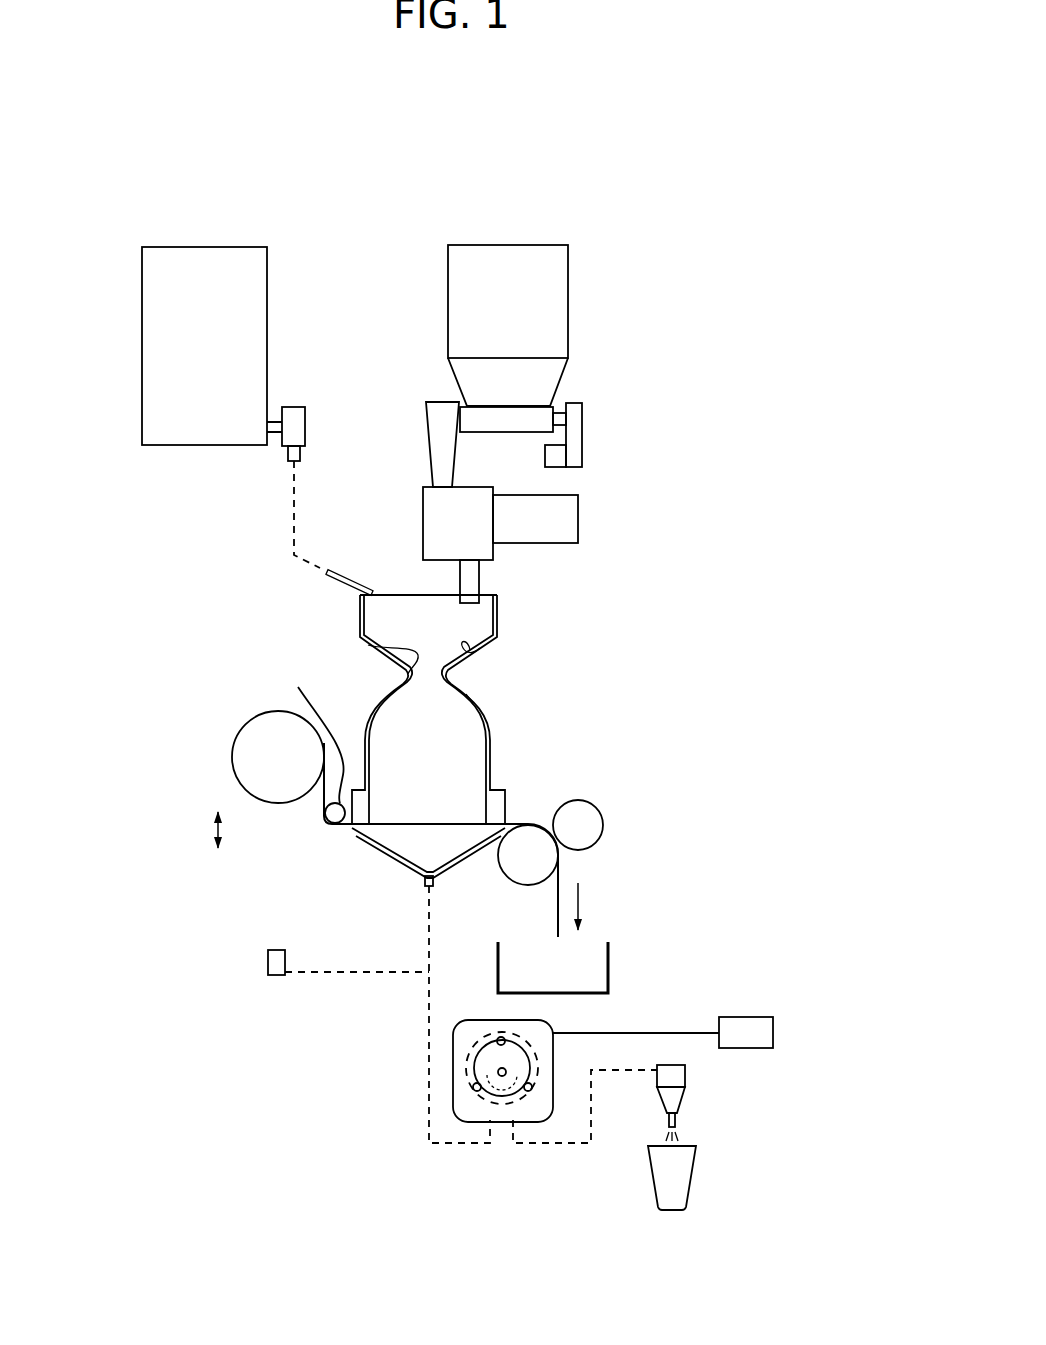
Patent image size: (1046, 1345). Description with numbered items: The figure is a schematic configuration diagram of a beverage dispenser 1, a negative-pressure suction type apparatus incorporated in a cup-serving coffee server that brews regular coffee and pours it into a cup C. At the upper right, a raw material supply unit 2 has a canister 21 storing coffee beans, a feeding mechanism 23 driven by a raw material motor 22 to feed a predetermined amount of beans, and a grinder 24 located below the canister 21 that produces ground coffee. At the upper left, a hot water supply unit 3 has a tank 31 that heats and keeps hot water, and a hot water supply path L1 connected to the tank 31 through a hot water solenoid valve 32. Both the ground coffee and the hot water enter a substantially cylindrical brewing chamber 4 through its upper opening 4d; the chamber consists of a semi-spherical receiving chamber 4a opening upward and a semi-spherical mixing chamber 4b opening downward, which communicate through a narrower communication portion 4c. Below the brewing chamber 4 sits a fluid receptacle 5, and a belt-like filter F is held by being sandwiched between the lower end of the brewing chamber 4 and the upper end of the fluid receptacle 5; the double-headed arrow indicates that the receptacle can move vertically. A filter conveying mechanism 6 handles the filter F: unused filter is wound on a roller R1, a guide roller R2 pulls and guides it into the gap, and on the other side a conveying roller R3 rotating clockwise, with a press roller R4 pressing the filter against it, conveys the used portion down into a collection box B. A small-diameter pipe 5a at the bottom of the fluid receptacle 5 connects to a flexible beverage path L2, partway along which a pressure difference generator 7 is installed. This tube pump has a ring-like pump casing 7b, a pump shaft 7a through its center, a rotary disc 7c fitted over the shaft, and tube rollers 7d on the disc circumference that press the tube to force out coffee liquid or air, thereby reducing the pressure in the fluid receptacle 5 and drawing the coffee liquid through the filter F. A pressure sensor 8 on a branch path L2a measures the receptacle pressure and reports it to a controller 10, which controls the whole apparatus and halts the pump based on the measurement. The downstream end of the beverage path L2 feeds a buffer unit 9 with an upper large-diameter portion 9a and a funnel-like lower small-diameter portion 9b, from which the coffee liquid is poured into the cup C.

The beverage dispenser 1 is at (317, 185).
The raw material supply unit 2 is at (588, 275).
The canister 21 is at (568, 325).
The raw material motor 22 is at (575, 455).
The feeding mechanism 23 is at (545, 405).
The grinder 24 is at (578, 520).
The hot water supply unit 3 is at (150, 240).
The tank 31 is at (142, 310).
The hot water solenoid valve 32 is at (296, 407).
The hot water supply path L1 is at (300, 478).
The brewing chamber 4 is at (615, 657).
The receiving chamber 4a is at (465, 645).
The mixing chamber 4b is at (468, 698).
The communication portion 4c is at (372, 652).
The upper opening 4d is at (413, 594).
The roller R1 is at (238, 737).
The guide roller R2 is at (309, 733).
The filter F is at (326, 806).
The fluid receptacle 5 is at (370, 851).
The pipe 5a is at (424, 880).
The filter conveying mechanism 6 is at (672, 803).
The conveying roller R3 is at (515, 880).
The press roller R4 is at (600, 808).
The collection box B is at (608, 955).
The beverage path L2 is at (428, 918).
The branch path L2a is at (322, 972).
The pressure sensor 8 is at (268, 957).
The pressure difference generator 7 is at (573, 1020).
The pump shaft 7a is at (503, 1078).
The pump casing 7b is at (483, 1037).
The rotary disc 7c is at (497, 1044).
The tube rollers 7d is at (473, 1074).
The controller 10 is at (748, 1017).
The buffer unit 9 is at (764, 1105).
The large-diameter portion 9a is at (685, 1072).
The small-diameter portion 9b is at (680, 1105).
The cup C is at (696, 1178).